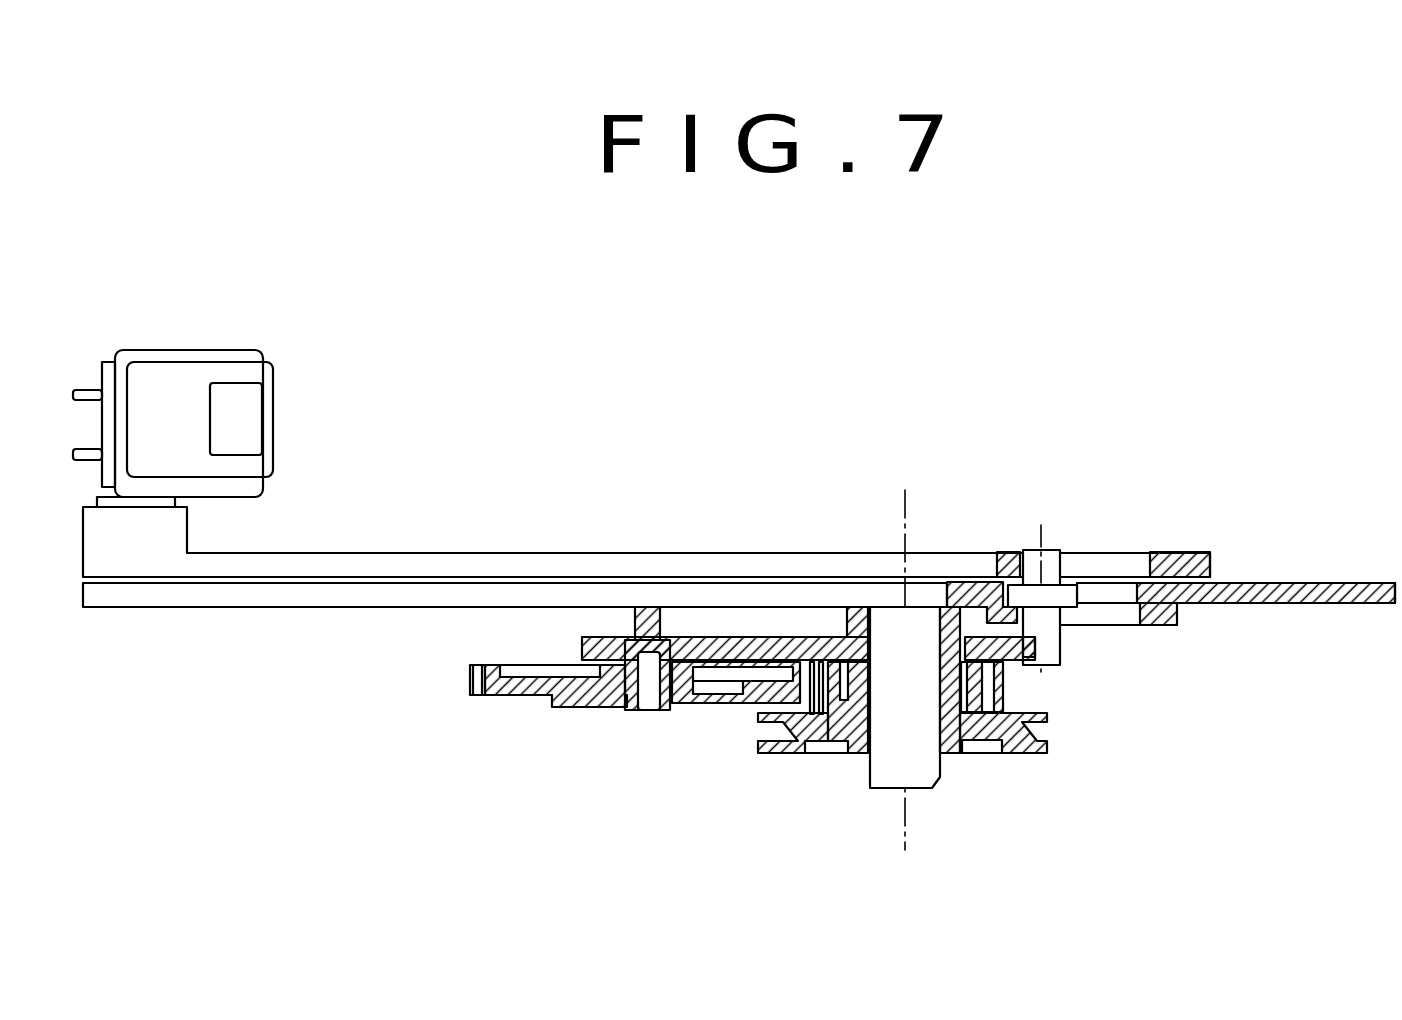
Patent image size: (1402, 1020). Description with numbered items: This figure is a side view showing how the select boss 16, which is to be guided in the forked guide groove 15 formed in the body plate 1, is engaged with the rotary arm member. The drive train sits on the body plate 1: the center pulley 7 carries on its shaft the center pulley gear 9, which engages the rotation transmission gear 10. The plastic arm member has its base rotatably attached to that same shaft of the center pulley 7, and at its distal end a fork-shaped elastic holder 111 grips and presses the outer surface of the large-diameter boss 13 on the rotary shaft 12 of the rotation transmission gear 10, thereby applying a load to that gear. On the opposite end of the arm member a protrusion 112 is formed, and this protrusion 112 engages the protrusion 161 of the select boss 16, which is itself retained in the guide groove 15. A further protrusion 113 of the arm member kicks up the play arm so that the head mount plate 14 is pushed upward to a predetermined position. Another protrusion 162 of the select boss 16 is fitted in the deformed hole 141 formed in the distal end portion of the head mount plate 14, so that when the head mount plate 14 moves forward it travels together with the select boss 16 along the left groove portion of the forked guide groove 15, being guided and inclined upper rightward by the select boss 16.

The body plate 1 is at (1305, 585).
The center pulley 7 is at (788, 755).
The center pulley gear 9 is at (1000, 690).
The rotation transmission gear 10 is at (470, 680).
The fork-shaped elastic holder 111 is at (608, 632).
The protrusion 112 is at (1058, 662).
The protrusion 113 is at (664, 622).
The rotary shaft 12 is at (632, 708).
The large-diameter boss 13 is at (705, 658).
The head mount plate 14 is at (445, 575).
The deformed hole 141 is at (1125, 562).
The forked guide groove 15 is at (1180, 600).
The select boss 16 is at (1000, 582).
The protrusion 161 is at (1060, 642).
The protrusion 162 is at (1058, 578).